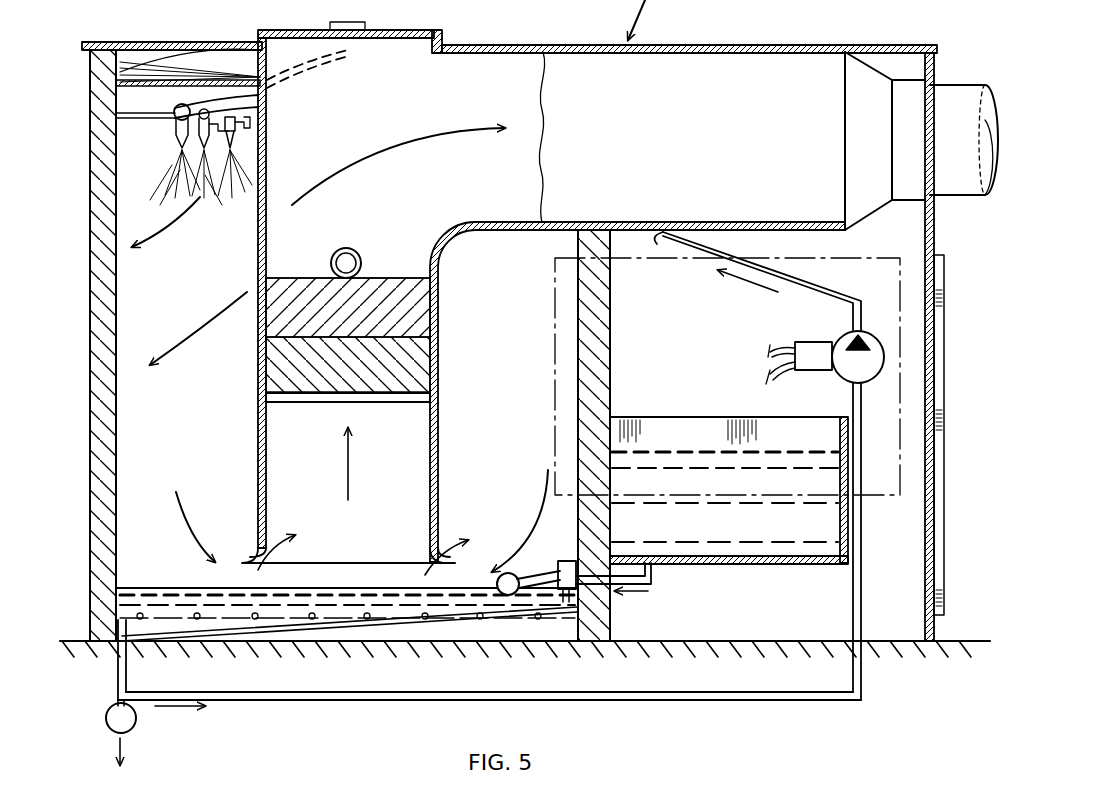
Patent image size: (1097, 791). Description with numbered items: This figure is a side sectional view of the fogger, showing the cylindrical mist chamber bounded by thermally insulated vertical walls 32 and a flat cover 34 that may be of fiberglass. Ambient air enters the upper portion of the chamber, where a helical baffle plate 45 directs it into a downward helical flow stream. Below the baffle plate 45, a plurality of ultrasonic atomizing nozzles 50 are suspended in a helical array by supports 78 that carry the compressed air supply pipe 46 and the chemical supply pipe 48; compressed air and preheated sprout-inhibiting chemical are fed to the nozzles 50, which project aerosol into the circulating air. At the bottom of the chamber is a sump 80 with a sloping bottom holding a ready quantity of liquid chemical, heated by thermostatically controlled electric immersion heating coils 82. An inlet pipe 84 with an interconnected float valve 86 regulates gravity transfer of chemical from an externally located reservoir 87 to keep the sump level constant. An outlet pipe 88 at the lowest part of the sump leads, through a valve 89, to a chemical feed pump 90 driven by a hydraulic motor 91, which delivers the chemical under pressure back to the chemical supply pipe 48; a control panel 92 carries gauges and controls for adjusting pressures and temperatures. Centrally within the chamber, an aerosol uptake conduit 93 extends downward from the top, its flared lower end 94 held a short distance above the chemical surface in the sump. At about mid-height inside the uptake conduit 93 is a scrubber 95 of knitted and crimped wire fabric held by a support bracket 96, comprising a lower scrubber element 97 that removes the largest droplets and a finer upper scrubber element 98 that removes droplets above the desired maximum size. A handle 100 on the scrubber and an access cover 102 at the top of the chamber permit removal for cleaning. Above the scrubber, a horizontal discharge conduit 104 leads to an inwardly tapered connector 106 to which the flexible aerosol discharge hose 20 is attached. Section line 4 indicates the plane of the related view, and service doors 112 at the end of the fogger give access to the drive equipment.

The section line 4- 4 is at (82, 48).
The flexible aerosol discharge hose 20 is at (960, 96).
The thermally insulated vertical walls 32 is at (118, 417).
The flat cover 34 is at (175, 42).
The helical baffle plate 45 is at (320, 50).
The compressed air supply pipe 46 is at (185, 100).
The chemical supply pipe 48 is at (224, 108).
The nozzles 50 is at (180, 138).
The supports 78 is at (160, 118).
The sump 80 is at (507, 625).
The electric immersion heating coils 82 is at (220, 625).
The inlet pipe 84 is at (648, 588).
The float valve 86 is at (566, 562).
The reservoir 87 is at (810, 522).
The outlet pipe 88 is at (118, 676).
The valve 89 is at (134, 726).
The chemical feed pump 90 is at (880, 355).
The hydraulic motor 91 is at (815, 350).
The control panel 92 is at (900, 458).
The aerosol uptake conduit 93 is at (290, 470).
The flared lower end 94 is at (442, 555).
The scrubber 95 is at (305, 272).
The support bracket 96 is at (320, 404).
The lower scrubber element 97 is at (388, 383).
The upper scrubber element 98 is at (392, 292).
The handle 100 is at (352, 252).
The access cover 102 is at (378, 32).
The discharge conduit 104 is at (683, 75).
The inwardly tapered connector 106 is at (863, 78).
The service doors 112 is at (940, 592).